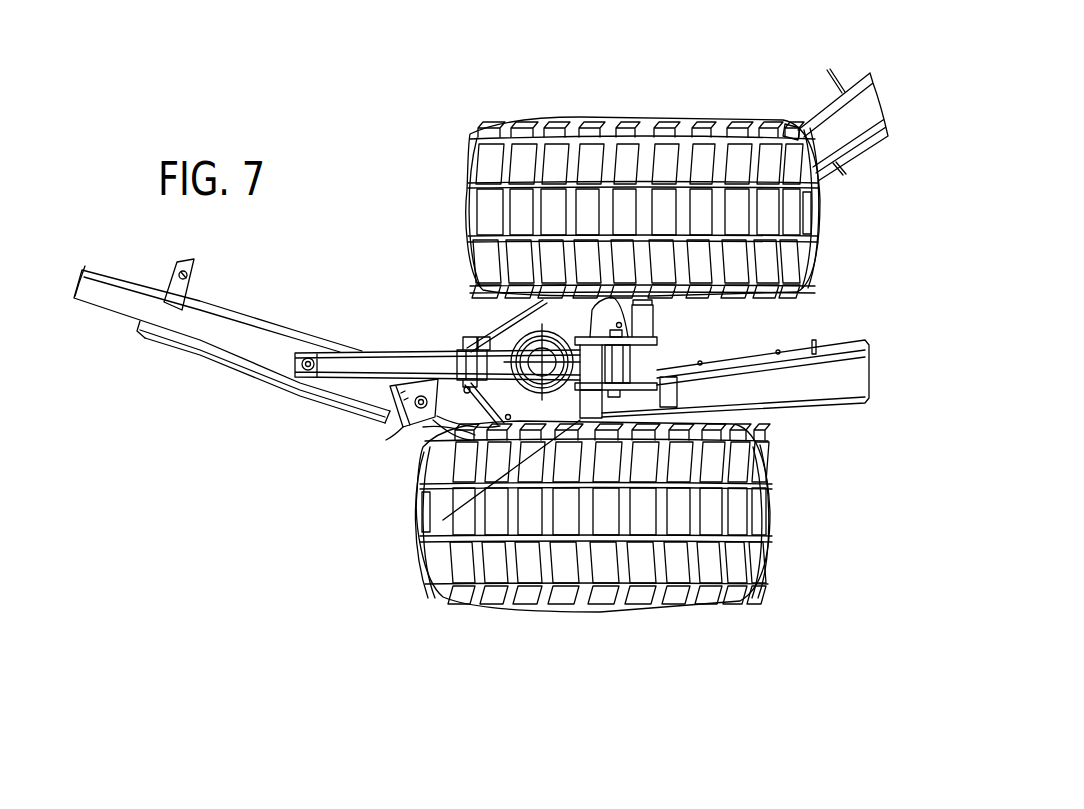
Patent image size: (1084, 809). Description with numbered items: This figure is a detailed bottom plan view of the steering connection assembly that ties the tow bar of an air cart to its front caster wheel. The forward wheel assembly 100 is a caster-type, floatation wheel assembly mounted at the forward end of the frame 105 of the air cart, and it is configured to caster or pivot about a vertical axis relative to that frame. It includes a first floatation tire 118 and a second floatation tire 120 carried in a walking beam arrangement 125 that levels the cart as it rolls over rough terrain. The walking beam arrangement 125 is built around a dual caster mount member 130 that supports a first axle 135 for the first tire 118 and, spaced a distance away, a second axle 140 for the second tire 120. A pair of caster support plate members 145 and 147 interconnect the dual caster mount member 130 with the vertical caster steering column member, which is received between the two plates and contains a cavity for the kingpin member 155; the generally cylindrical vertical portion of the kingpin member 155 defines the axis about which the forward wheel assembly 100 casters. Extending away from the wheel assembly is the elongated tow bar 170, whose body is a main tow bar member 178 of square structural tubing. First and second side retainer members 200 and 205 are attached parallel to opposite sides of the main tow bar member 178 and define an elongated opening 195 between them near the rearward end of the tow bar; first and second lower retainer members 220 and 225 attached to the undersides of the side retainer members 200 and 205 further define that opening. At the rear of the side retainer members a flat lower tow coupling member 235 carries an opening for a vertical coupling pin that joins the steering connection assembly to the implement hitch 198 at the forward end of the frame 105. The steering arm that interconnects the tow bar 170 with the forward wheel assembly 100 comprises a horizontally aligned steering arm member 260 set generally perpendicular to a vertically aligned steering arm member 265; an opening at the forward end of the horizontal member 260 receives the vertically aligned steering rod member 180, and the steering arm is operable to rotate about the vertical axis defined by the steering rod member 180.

The forward wheel assembly 100 is at (320, 602).
The frame 105 is at (866, 72).
The first floatation tire 118 is at (463, 157).
The second floatation tire 120 is at (457, 604).
The walking beam arrangement 125 is at (673, 322).
The dual caster mount member 130 is at (569, 410).
The first axle 135 is at (700, 296).
The second axle 140 is at (590, 421).
The caster support plate member 145 is at (420, 557).
The caster support plate member 147 is at (502, 347).
The kingpin member 155 is at (423, 427).
The elongated tow bar 170 is at (112, 208).
The main tow bar member 178 is at (88, 302).
The steering rod member 180 is at (318, 393).
The elongated opening 195 is at (232, 329).
The implement hitch 198 is at (410, 428).
The first side retainer member 200 is at (403, 427).
The second side retainer member 205 is at (273, 335).
The first lower retainer member 220 is at (192, 343).
The second lower retainer member 225 is at (182, 335).
The lower tow coupling member 235 is at (412, 427).
The horizontally aligned steering arm member 260 is at (393, 352).
The vertically aligned steering arm member 265 is at (477, 335).